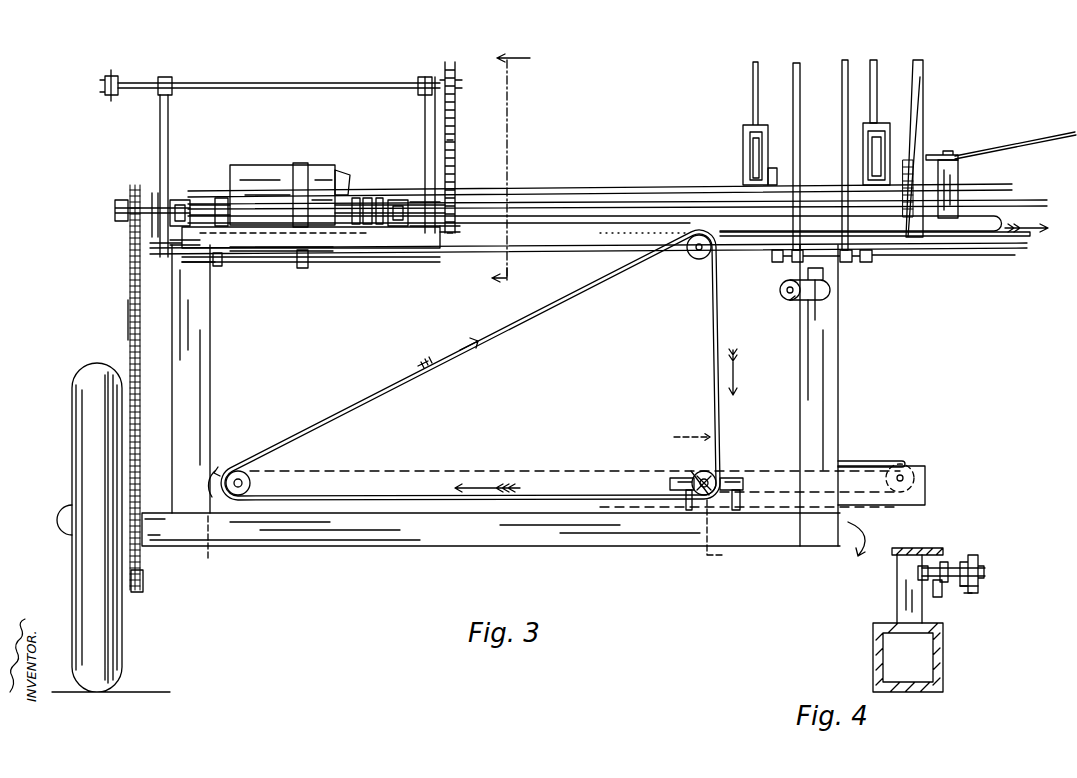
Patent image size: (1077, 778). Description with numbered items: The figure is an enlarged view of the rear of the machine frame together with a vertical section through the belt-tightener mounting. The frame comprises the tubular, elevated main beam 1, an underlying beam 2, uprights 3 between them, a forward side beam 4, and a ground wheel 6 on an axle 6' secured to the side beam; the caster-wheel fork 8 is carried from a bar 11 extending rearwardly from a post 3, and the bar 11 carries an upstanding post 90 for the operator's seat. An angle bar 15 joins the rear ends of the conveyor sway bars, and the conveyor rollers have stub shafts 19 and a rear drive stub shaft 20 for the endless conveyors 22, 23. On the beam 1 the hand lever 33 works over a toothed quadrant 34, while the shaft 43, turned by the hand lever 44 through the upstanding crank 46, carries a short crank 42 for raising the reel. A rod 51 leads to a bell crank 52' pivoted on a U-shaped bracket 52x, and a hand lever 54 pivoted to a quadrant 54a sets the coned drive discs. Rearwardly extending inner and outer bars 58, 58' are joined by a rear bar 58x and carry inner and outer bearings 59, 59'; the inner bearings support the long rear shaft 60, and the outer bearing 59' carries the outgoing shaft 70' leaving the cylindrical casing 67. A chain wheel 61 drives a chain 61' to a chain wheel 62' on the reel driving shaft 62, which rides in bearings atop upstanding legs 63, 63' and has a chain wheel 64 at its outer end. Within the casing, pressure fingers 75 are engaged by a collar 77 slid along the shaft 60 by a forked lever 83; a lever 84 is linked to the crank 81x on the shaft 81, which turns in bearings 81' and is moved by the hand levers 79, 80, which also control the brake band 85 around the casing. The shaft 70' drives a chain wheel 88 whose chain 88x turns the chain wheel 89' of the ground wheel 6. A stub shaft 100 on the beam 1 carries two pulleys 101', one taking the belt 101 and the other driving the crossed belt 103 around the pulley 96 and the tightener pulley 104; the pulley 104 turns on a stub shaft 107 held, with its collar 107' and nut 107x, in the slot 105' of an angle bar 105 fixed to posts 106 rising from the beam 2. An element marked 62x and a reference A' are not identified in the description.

In FIG. 3, the main elevated beam 1 is at (572, 255).
In FIG. 3, the underlying beam 2 is at (550, 546).
In FIG. 4, the underlying beam 2 is at (944, 655).
In FIG. 3, the post 3 is at (202, 362).
In FIG. 3, the side beam 4 is at (467, 503).
In FIG. 3, the ground wheel 6 is at (104, 527).
In FIG. 3, the axle 6' is at (53, 519).
In FIG. 3, the fork 8 is at (508, 169).
In FIG. 3, the bar 11 is at (795, 301).
In FIG. 3, the angle bar 15 is at (905, 505).
In FIG. 3, the stub shaft 19 is at (903, 470).
In FIG. 3, the stub shaft 20 is at (251, 484).
In FIG. 3, the endless conveyor 22 is at (866, 460).
In FIG. 3, the endless conveyor 23 is at (222, 198).
In FIG. 3, the hand lever 33 is at (877, 62).
In FIG. 3, the quadrant 34 is at (880, 160).
In FIG. 3, the short crank 42 is at (150, 232).
In FIG. 3, the shaft 43 is at (604, 189).
In FIG. 3, the hand lever 44 is at (751, 92).
In FIG. 3, the upstanding crank 46 is at (778, 174).
In FIG. 3, the rod 51 is at (1023, 145).
In FIG. 3, the bell crank 52' is at (948, 146).
In FIG. 3, the U-shaped bracket 52x is at (958, 167).
In FIG. 3, the hand lever 54 is at (923, 72).
In FIG. 3, the quadrant 54a is at (905, 238).
In FIG. 3, the inner bar 58 is at (295, 255).
In FIG. 3, the outer bar 58' is at (152, 256).
In FIG. 3, the rear bar 58x is at (280, 252).
In FIG. 3, the inner bearing 59 is at (425, 227).
In FIG. 3, the outer bearing 59' is at (157, 192).
In FIG. 3, the rear shaft 60 is at (556, 210).
In FIG. 3, the chain wheel 61 is at (463, 235).
In FIG. 3, the endless chain 61' is at (466, 184).
In FIG. 3, the reel driving shaft 62 is at (279, 76).
In FIG. 3, the chain wheel 62' is at (458, 137).
In FIG. 3, the wedge 62x is at (343, 170).
In FIG. 3, the upstanding leg 63 is at (458, 155).
In FIG. 3, the upstanding leg 63' is at (182, 176).
In FIG. 3, the chain wheel 64 is at (108, 96).
In FIG. 3, the casing 67 is at (258, 178).
In FIG. 3, the outgoing shaft 70' is at (140, 198).
In FIG. 3, the pressure finger 75 is at (356, 198).
In FIG. 3, the collar 77 is at (382, 200).
In FIG. 3, the hand lever 79 is at (797, 63).
In FIG. 3, the hand lever 80 is at (845, 60).
In FIG. 3, the shaft 81 is at (311, 270).
In FIG. 3, the bearing 81' is at (614, 278).
In FIG. 3, the crank 81x is at (182, 262).
In FIG. 3, the forked lever 83 is at (396, 202).
In FIG. 3, the lever 84 is at (355, 240).
In FIG. 3, the brake band 85 is at (300, 163).
In FIG. 3, the chain wheel 88 is at (129, 186).
In FIG. 3, the endless chain 88x is at (129, 325).
In FIG. 3, the chain wheel 89' is at (150, 581).
In FIG. 3, the post 90 is at (826, 280).
In FIG. 3, the pulley 96 is at (240, 471).
In FIG. 3, the stub shaft 100 is at (698, 259).
In FIG. 3, the driving belt 101 is at (884, 252).
In FIG. 3, the pulley 101' is at (645, 240).
In FIG. 3, the crossed belt 103 is at (455, 360).
In FIG. 3, the pulley 104 is at (693, 474).
In FIG. 4, the pulley 104 is at (979, 592).
In FIG. 3, the angle bar 105 is at (728, 471).
In FIG. 4, the angle bar 105 is at (917, 541).
In FIG. 3, the slot 105' is at (673, 526).
In FIG. 4, the slot 105' is at (966, 603).
In FIG. 3, the post 106 is at (742, 508).
In FIG. 4, the post 106 is at (897, 594).
In FIG. 3, the stub shaft 107 is at (723, 470).
In FIG. 4, the stub shaft 107 is at (988, 571).
In FIG. 4, the collar 107' is at (953, 556).
In FIG. 4, the nut 107x is at (917, 572).
In FIG. 3, the axis A' is at (912, 521).